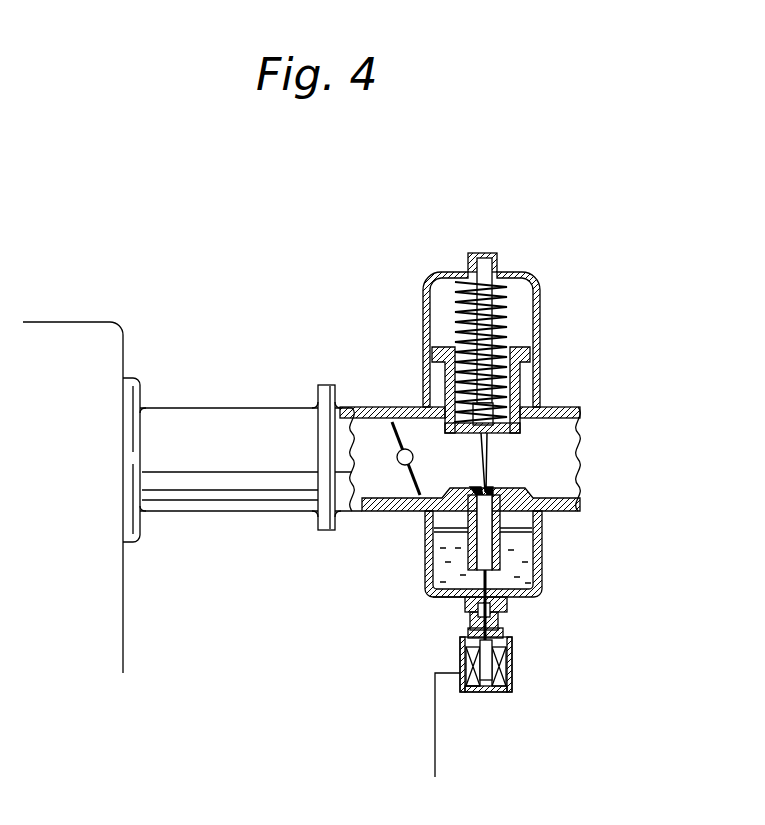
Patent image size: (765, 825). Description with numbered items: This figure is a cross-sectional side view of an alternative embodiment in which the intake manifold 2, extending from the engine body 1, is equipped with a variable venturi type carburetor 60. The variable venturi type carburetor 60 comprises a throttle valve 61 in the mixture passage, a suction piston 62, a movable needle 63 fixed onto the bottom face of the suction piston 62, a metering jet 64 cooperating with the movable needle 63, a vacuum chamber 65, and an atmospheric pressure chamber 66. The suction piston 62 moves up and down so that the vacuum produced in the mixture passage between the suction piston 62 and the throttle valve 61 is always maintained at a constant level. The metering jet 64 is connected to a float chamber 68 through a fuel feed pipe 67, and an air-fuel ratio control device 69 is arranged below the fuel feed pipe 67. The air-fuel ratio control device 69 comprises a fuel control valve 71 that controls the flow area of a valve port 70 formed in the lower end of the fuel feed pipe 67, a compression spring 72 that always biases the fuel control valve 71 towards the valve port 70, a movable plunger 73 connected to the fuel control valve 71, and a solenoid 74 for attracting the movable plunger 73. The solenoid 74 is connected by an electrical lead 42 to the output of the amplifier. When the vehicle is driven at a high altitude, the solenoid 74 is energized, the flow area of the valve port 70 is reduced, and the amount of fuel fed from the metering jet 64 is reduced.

The engine body 1 is at (80, 324).
The intake manifold 2 is at (217, 422).
The electrical lead 42 is at (435, 728).
The variable venturi type carburetor 60 is at (548, 342).
The throttle valve 61 is at (405, 488).
The suction piston 62 is at (527, 433).
The movable needle 63 is at (490, 462).
The metering jet 64 is at (497, 485).
The vacuum chamber 65 is at (517, 305).
The atmospheric pressure chamber 66 is at (525, 383).
The fuel feed pipe 67 is at (500, 540).
The float chamber 68 is at (530, 572).
The air-fuel ratio control device 69 is at (513, 677).
The valve port 70 is at (515, 603).
The fuel control valve 71 is at (456, 600).
The compression spring 72 is at (497, 625).
The movable plunger 73 is at (511, 662).
The solenoid 74 is at (470, 690).